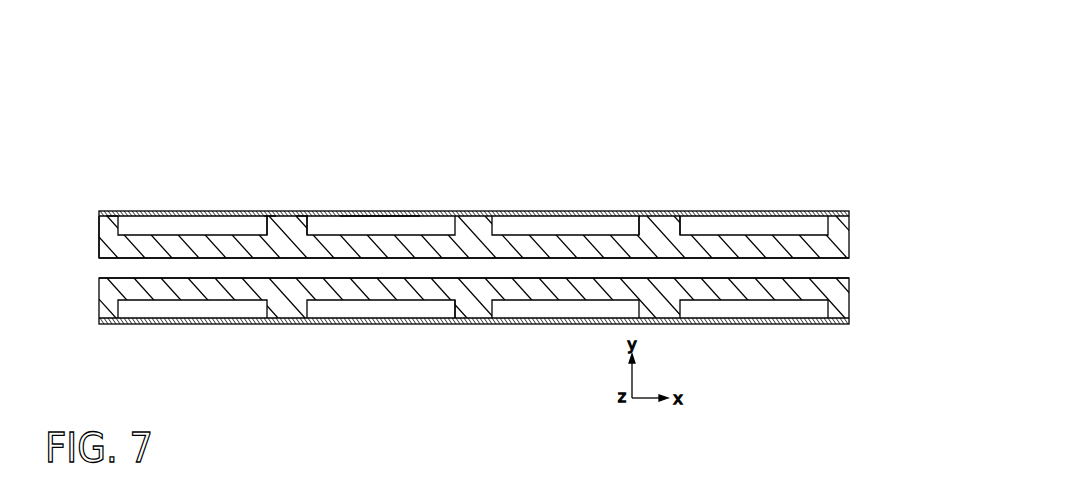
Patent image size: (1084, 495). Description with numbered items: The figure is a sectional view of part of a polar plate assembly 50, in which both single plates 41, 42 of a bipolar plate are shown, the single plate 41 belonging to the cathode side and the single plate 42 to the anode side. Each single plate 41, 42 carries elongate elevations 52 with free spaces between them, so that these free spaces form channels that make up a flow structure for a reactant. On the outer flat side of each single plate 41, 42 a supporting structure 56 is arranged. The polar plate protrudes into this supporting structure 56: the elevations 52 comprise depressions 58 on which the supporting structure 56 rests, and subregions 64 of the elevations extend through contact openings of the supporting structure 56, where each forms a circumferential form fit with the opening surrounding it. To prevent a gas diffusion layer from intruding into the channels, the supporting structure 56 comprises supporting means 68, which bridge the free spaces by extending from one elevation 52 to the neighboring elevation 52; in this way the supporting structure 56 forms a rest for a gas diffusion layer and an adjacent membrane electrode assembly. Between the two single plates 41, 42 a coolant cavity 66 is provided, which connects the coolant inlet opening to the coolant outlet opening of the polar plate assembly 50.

The polar plate assembly 50 is at (503, 230).
The single plate 41 is at (484, 184).
The single plate 42 is at (487, 339).
The elevation 52 is at (473, 224).
The supporting structure 56 is at (565, 199).
The depression 58 is at (112, 213).
The subregion of the elevation 64 is at (101, 211).
The supporting means 68 is at (373, 213).
The coolant cavity 66 is at (475, 286).